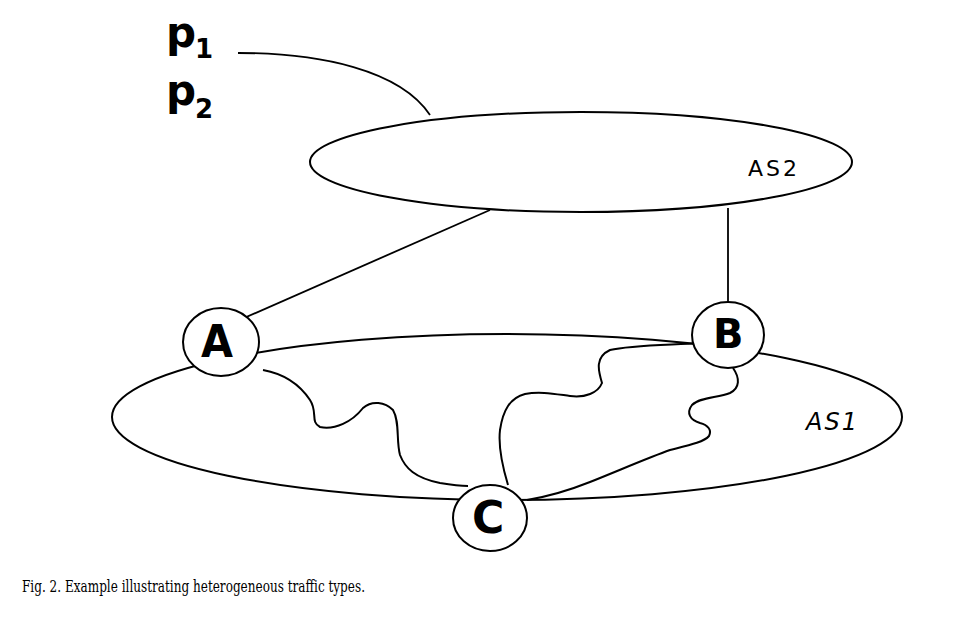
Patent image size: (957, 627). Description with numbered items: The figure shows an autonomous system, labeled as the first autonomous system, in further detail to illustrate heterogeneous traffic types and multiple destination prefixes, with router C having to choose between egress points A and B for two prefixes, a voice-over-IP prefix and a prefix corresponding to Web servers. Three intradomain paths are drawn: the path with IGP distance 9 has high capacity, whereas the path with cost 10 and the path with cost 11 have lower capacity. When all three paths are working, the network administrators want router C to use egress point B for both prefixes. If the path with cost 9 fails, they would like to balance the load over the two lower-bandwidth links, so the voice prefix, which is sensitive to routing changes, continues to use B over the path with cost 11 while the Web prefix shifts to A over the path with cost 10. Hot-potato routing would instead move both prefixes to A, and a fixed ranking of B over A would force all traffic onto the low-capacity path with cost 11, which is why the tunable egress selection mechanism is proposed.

The path with IGP distance 9 is at (638, 434).
The path with cost 10 is at (365, 428).
The path with cost 11 is at (599, 414).